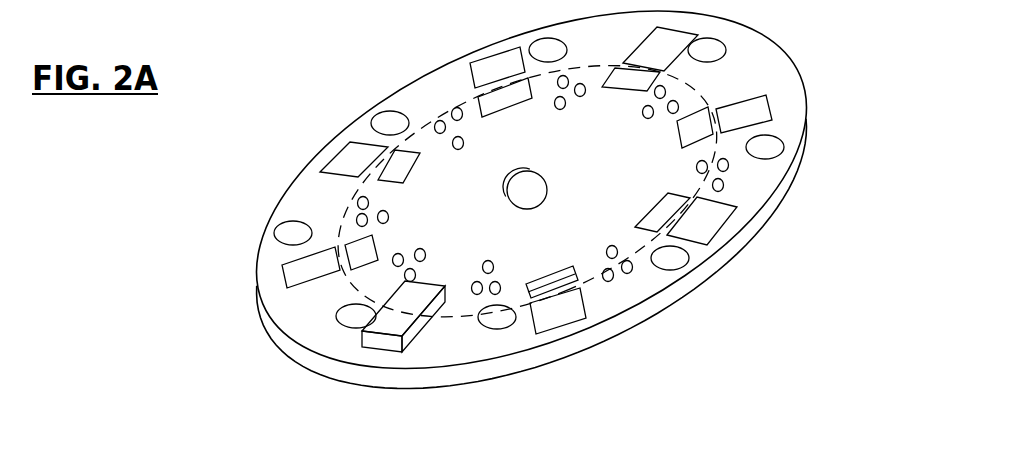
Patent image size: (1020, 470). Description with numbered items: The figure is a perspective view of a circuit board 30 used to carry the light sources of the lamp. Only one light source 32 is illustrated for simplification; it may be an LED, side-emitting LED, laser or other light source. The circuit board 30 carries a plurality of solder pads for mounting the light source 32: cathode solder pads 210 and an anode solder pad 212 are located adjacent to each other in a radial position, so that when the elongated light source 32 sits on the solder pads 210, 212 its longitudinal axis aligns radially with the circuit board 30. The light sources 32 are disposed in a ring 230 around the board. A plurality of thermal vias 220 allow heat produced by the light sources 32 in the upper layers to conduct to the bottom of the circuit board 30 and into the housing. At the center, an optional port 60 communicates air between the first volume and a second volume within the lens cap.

The circuit board 30 is at (470, 365).
The light source 32 is at (383, 343).
The port 60 is at (540, 185).
The cathode solder pad 210 is at (570, 313).
The anode solder pad 212 is at (563, 280).
The thermal via 220 is at (712, 50).
The ring 230 is at (347, 205).